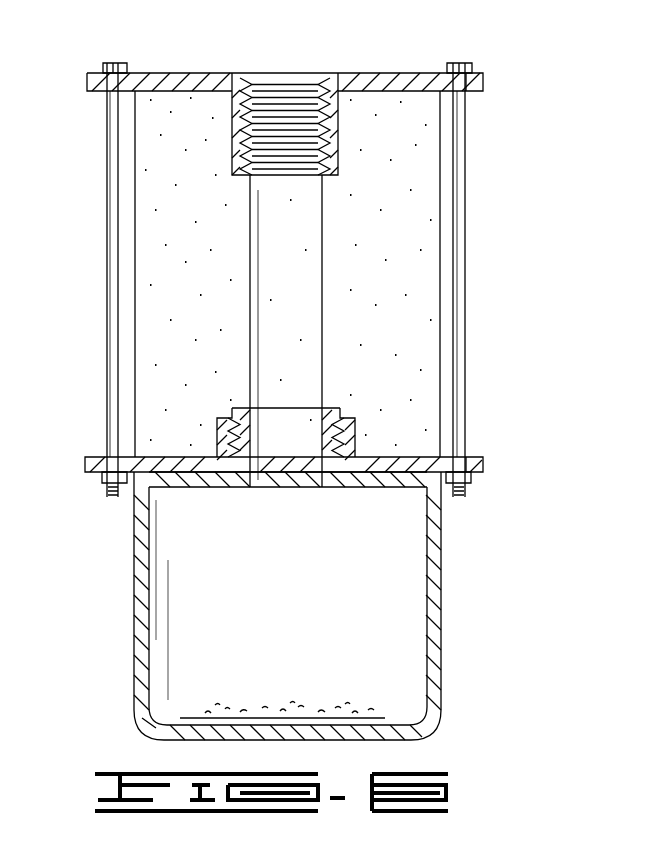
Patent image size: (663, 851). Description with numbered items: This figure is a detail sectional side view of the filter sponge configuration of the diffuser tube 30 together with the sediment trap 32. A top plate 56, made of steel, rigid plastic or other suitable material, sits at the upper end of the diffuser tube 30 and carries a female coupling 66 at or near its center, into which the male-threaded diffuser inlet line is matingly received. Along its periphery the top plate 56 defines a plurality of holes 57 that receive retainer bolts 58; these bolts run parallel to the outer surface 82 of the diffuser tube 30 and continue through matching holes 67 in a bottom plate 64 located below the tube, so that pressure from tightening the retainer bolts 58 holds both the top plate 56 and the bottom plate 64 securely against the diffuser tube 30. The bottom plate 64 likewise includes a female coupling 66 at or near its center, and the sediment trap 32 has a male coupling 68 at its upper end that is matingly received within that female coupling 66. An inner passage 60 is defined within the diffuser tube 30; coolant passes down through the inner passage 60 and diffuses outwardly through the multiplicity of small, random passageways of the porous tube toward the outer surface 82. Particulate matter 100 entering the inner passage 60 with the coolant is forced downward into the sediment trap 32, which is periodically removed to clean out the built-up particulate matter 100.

The top plate 56 is at (417, 88).
The holes 57 is at (483, 82).
The retainer bolts 58 is at (466, 145).
The outer surface 82 is at (440, 193).
The diffuser tube 30 is at (153, 160).
The female coupling 66 is at (256, 102).
The inner passage 60 is at (262, 275).
The bottom plate 64 is at (410, 456).
The matching holes 67 is at (483, 462).
The male coupling 68 is at (262, 480).
The sediment trap 32 is at (440, 560).
The particulate matter 100 is at (345, 712).